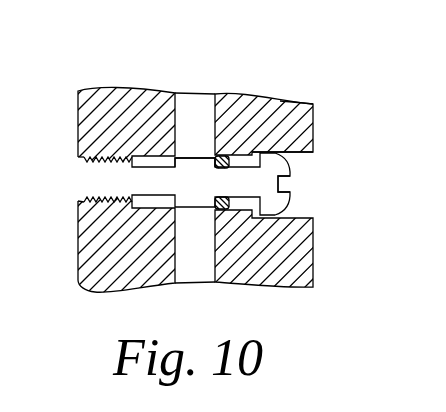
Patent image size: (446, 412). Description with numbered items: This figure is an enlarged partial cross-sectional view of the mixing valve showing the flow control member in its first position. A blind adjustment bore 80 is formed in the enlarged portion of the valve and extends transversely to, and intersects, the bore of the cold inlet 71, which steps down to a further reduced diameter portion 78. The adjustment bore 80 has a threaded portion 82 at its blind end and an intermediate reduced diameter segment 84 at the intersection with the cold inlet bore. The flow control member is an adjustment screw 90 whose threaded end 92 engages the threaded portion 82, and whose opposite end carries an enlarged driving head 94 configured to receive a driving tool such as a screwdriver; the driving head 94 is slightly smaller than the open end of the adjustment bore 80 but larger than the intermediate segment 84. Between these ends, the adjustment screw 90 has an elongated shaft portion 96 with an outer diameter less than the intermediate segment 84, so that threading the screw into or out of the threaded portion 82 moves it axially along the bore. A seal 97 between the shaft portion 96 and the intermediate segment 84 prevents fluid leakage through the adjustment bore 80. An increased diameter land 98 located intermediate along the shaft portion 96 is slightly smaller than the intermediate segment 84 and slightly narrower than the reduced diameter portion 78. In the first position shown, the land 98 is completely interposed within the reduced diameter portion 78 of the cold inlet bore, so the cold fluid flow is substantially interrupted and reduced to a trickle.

The cold inlet 71 is at (313, 104).
The reduced diameter portion 78 is at (214, 94).
The adjustment bore 80 is at (305, 153).
The threaded portion 82 is at (100, 153).
The intermediate reduced diameter segment 84 is at (170, 154).
The adjustment screw 90 is at (287, 163).
The threaded end 92 is at (110, 178).
The driving head 94 is at (287, 195).
The shaft portion 96 is at (255, 222).
The seal 97 is at (215, 208).
The land 98 is at (197, 157).